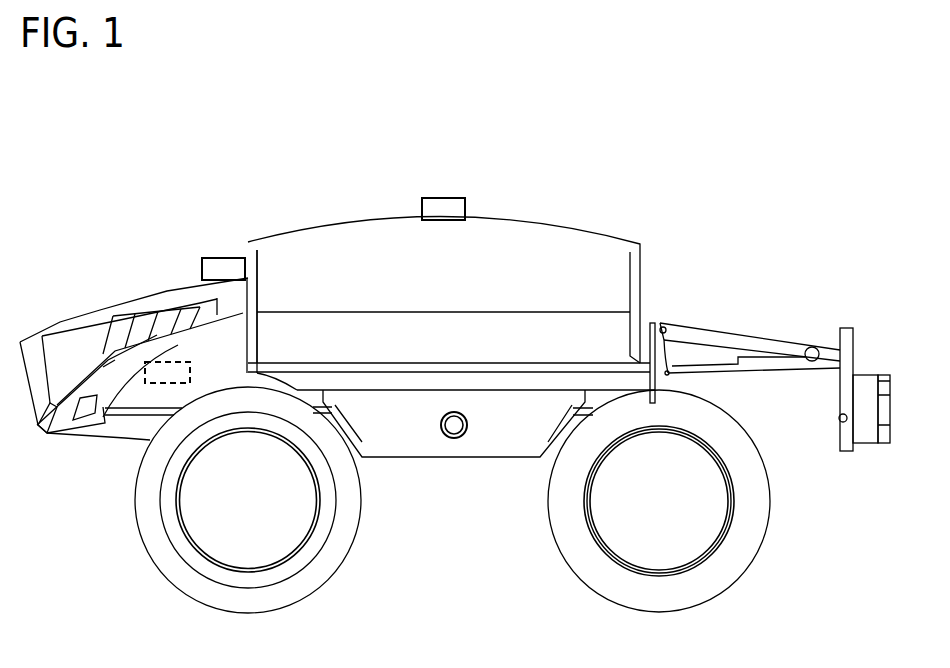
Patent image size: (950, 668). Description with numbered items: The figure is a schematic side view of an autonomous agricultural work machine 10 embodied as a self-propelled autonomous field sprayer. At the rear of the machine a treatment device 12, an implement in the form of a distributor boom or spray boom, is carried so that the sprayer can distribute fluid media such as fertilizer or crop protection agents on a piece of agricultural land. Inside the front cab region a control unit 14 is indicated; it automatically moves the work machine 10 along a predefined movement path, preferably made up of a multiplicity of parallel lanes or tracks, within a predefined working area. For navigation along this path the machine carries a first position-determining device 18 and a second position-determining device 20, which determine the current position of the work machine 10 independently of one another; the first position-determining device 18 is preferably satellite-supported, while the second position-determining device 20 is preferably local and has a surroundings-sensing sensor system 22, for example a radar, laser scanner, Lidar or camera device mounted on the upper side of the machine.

The autonomous agricultural work machine 10 is at (458, 95).
The treatment device 12 is at (828, 304).
The control unit 14 is at (160, 363).
The first position-determining device 18 is at (222, 258).
The second position-determining device 20 is at (393, 192).
The surroundings-sensing sensor system 22 is at (465, 206).